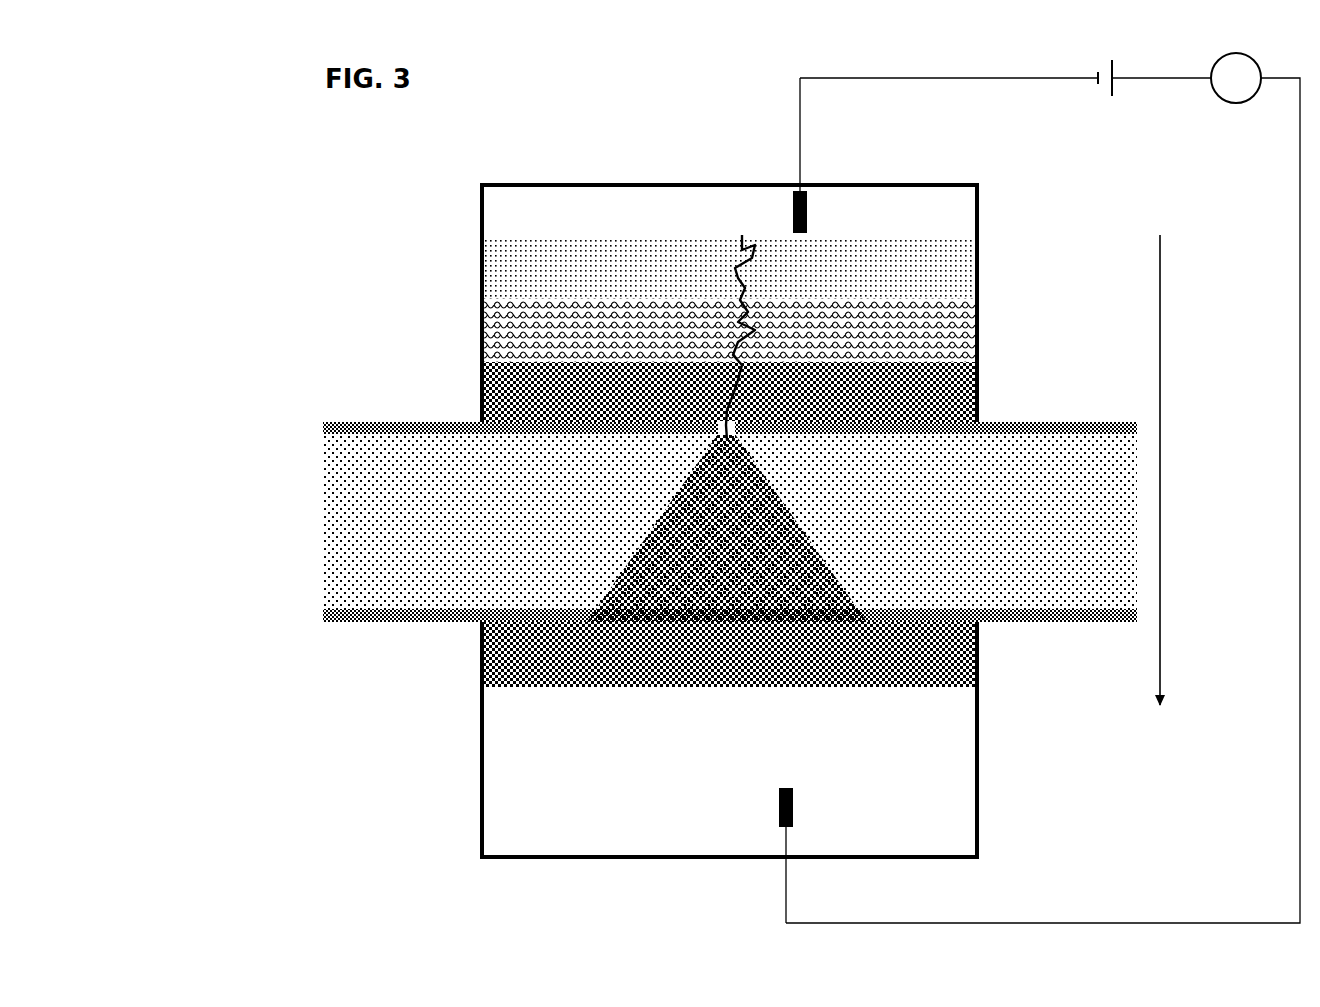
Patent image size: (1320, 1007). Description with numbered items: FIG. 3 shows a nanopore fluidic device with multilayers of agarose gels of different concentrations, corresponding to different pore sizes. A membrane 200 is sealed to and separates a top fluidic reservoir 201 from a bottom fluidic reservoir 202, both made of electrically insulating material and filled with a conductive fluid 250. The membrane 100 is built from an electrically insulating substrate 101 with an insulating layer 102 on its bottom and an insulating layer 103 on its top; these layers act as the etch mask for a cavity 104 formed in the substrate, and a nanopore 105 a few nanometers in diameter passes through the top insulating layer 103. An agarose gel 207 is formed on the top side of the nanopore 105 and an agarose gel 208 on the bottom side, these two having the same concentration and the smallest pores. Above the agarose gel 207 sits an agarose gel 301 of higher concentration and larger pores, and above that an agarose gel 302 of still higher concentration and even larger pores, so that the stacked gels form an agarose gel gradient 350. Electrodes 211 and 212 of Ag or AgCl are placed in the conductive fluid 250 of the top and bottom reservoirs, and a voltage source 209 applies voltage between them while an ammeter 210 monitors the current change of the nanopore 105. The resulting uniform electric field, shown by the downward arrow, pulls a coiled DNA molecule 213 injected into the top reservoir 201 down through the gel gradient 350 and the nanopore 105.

The membrane 200 is at (273, 126).
The membrane 100 is at (637, 514).
The substrate 101 is at (335, 522).
The insulating layer 102 is at (672, 613).
The insulating layer 103 is at (325, 428).
The cavity 104 is at (805, 532).
The nanopore 105 is at (755, 405).
The top fluidic reservoir 201 is at (654, 267).
The bottom fluidic reservoir 202 is at (732, 739).
The agarose gel 207 is at (679, 390).
The agarose gel 208 is at (520, 673).
The voltage source 209 is at (1118, 104).
The ammeter 210 is at (1233, 110).
The electrode 211 is at (816, 203).
The electrode 212 is at (806, 774).
The DNA molecule 213 is at (718, 272).
The conductive fluid 250 is at (546, 216).
The agarose gel 301 is at (500, 335).
The agarose gel 302 is at (502, 280).
The agarose gel gradient 350 is at (620, 328).